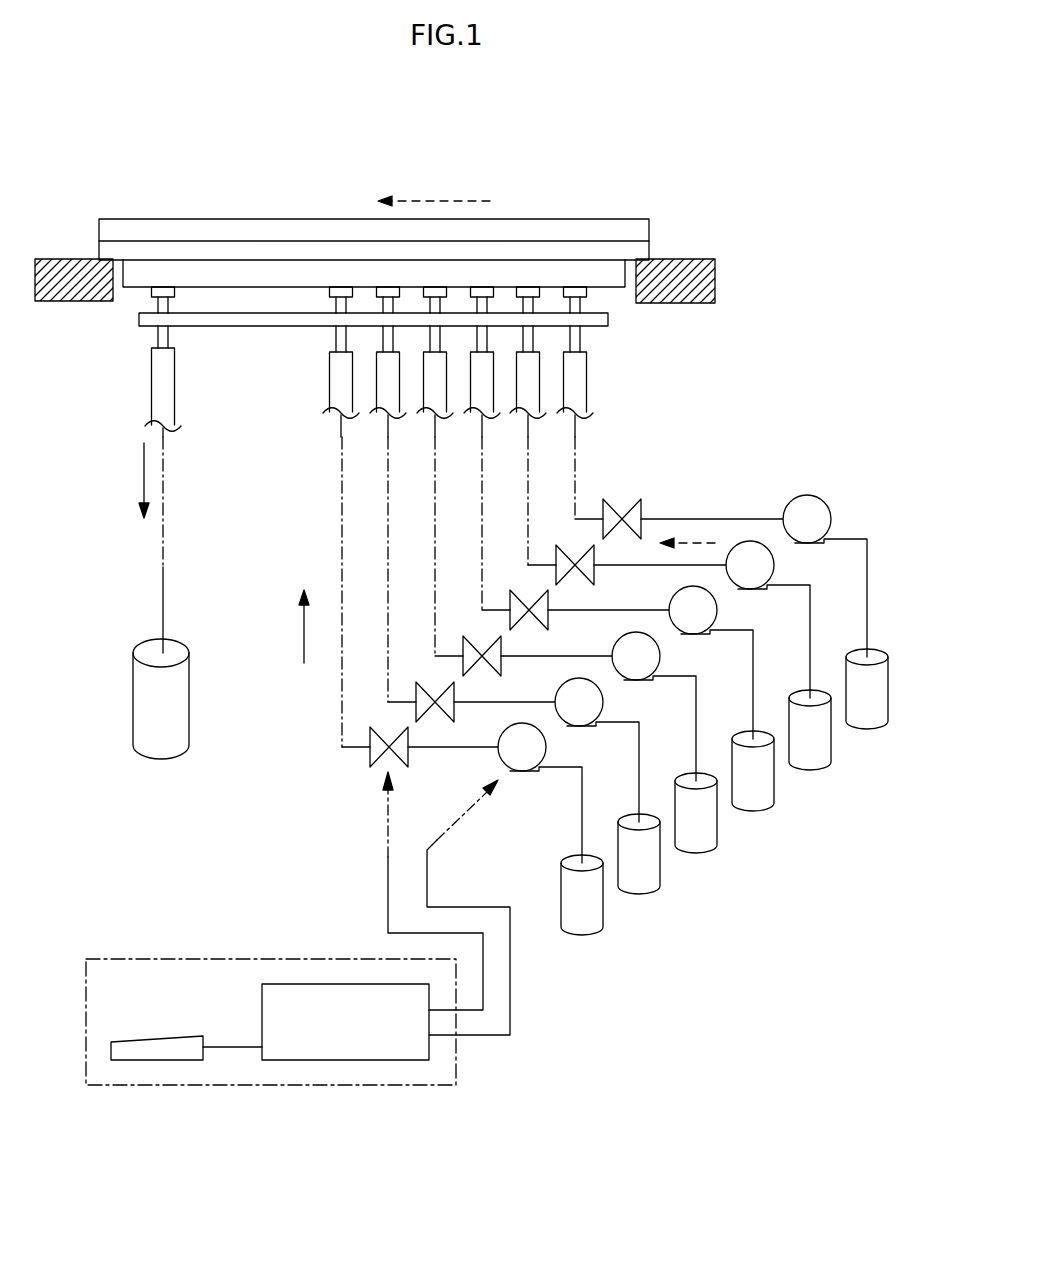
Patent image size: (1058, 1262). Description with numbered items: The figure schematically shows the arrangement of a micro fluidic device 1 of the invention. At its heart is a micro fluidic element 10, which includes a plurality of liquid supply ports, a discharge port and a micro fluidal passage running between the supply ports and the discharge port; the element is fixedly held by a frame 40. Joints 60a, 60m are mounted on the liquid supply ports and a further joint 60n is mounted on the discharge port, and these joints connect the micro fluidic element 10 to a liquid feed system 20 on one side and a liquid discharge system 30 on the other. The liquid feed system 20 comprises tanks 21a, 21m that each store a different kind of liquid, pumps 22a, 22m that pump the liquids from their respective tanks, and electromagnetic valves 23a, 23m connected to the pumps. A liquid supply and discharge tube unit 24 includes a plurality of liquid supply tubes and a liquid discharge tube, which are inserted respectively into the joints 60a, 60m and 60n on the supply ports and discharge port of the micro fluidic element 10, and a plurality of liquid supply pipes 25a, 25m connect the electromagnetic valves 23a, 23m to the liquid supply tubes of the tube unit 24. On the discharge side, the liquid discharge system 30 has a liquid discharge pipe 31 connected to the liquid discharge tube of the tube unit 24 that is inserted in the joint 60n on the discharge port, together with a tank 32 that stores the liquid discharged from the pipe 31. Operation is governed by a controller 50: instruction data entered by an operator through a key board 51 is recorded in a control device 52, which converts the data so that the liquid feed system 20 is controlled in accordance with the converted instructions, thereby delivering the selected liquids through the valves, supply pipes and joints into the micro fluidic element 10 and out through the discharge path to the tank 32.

The micro fluidic device 1 is at (250, 115).
The micro fluidic element 10 is at (520, 219).
The frame 40 is at (668, 262).
The joint 60n is at (163, 297).
The joint 60m is at (341, 297).
The joint 60a is at (575, 297).
The liquid supply and discharge tube unit 24 is at (608, 320).
The liquid discharge pipe 31 is at (152, 387).
The liquid supply pipe 25m is at (330, 377).
The liquid supply pipe 25a is at (587, 382).
The liquid discharge system 30 is at (138, 537).
The tank 32 is at (145, 700).
The pump 22a is at (815, 500).
The electromagnetic valve 23a is at (645, 505).
The electromagnetic valve 23m is at (370, 760).
The pump 22m is at (528, 775).
The tank 21a is at (870, 722).
The tank 21m is at (582, 915).
The liquid feed system 20 is at (733, 850).
The controller 50 is at (316, 957).
The key board 51 is at (163, 1040).
The control device 52 is at (262, 1012).